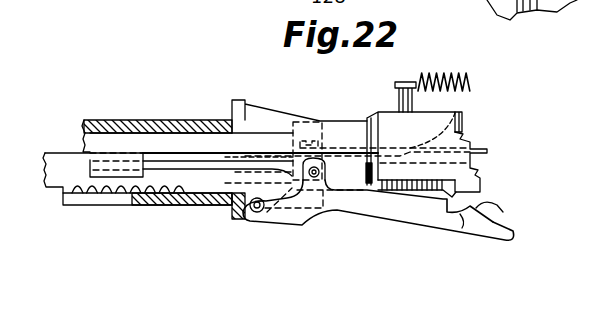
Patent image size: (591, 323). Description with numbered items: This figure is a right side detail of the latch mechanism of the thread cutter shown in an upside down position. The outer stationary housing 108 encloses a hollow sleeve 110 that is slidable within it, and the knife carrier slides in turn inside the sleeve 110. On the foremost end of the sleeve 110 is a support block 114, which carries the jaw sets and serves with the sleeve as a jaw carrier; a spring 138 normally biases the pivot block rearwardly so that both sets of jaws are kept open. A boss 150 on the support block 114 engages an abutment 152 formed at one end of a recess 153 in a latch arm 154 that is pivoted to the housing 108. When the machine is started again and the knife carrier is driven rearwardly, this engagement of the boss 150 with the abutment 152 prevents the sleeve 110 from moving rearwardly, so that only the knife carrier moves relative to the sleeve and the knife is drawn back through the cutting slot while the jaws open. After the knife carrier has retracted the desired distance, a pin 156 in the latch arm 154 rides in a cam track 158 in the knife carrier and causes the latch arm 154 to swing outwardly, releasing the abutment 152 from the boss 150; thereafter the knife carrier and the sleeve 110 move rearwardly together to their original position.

The housing 108 is at (108, 132).
The sleeve 110 is at (176, 146).
The support block 114 is at (380, 108).
The spring 138 is at (472, 83).
The boss 150 is at (480, 184).
The abutment 152 is at (463, 226).
The recess 153 is at (493, 210).
The latch arm 154 is at (381, 205).
The pin 156 is at (313, 180).
The cam track 158 is at (211, 170).